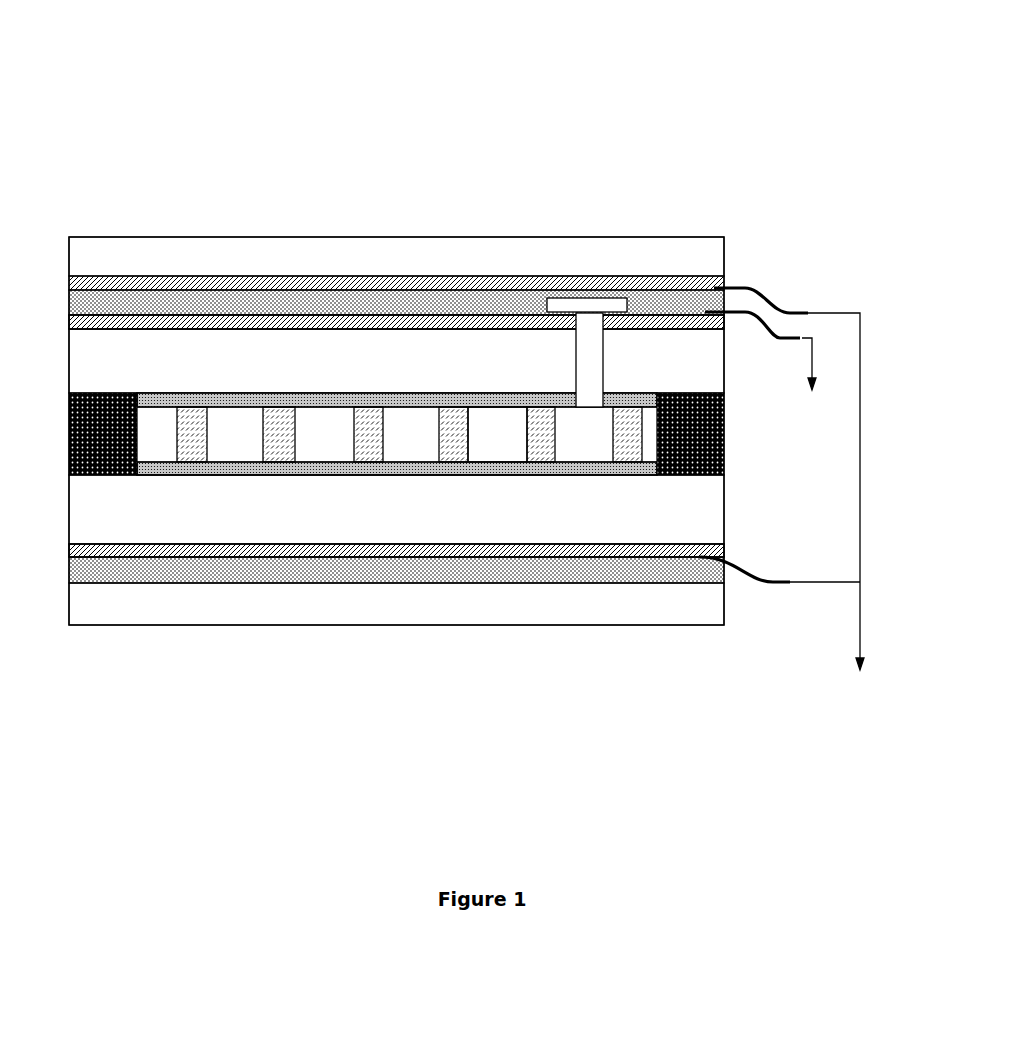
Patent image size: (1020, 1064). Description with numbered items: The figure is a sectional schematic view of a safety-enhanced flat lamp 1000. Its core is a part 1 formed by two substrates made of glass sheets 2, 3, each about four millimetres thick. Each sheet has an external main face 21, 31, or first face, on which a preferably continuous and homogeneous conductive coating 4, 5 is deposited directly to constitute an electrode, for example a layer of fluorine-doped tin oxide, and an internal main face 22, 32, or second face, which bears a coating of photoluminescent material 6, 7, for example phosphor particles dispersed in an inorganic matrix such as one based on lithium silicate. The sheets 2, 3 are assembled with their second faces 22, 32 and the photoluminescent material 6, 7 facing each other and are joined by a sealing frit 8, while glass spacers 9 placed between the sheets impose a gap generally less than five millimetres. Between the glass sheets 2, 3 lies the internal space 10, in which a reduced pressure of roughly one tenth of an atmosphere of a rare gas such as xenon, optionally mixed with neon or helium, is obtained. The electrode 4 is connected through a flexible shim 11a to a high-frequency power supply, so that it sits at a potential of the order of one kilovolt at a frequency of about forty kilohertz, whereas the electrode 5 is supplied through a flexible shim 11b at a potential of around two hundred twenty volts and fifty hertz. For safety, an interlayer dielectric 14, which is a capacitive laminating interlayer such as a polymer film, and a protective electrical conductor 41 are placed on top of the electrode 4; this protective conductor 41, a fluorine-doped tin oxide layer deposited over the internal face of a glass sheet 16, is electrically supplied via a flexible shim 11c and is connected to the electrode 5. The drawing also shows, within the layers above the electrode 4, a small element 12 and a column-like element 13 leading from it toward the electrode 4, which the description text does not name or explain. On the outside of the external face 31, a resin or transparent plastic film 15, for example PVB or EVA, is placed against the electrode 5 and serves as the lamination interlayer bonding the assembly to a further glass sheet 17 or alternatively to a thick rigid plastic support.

The flat lamp 1000 is at (565, 66).
The part 1 is at (406, 440).
The glass sheet 2 is at (95, 365).
The glass sheet 3 is at (82, 517).
The electrode 4 is at (645, 323).
The electrode 5 is at (538, 552).
The photoluminescent material coating 6 is at (287, 402).
The photoluminescent material coating 7 is at (283, 478).
The sealing frit 8 is at (70, 455).
The glass spacers 9 is at (368, 445).
The internal space 10 is at (503, 452).
The flexible shim 11a is at (776, 340).
The flexible shim 11b is at (758, 577).
The flexible shim 11c is at (743, 285).
The contact pad 12 is at (583, 337).
The conductive via 13 is at (568, 305).
The interlayer dielectric 14 is at (107, 302).
The plastic film 15 is at (127, 577).
The glass sheet 16 is at (192, 265).
The glass sheet 17 is at (183, 612).
The external main face 21 is at (122, 318).
The internal main face 22 is at (419, 400).
The external main face 31 is at (651, 553).
The internal main face 32 is at (410, 470).
The protective electrical conductor 41 is at (707, 270).